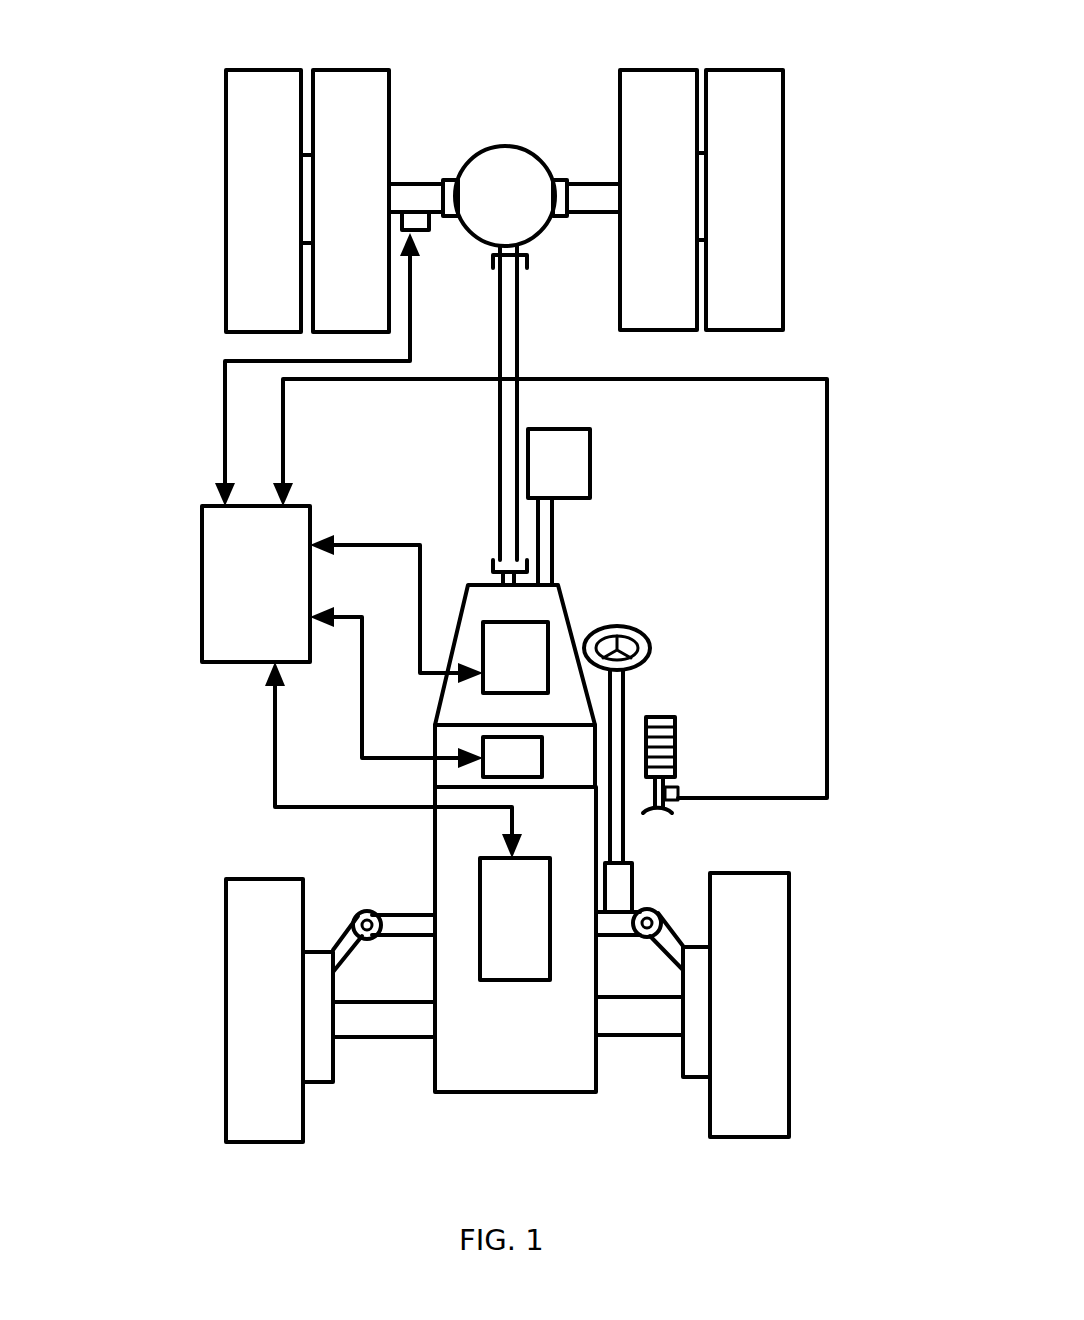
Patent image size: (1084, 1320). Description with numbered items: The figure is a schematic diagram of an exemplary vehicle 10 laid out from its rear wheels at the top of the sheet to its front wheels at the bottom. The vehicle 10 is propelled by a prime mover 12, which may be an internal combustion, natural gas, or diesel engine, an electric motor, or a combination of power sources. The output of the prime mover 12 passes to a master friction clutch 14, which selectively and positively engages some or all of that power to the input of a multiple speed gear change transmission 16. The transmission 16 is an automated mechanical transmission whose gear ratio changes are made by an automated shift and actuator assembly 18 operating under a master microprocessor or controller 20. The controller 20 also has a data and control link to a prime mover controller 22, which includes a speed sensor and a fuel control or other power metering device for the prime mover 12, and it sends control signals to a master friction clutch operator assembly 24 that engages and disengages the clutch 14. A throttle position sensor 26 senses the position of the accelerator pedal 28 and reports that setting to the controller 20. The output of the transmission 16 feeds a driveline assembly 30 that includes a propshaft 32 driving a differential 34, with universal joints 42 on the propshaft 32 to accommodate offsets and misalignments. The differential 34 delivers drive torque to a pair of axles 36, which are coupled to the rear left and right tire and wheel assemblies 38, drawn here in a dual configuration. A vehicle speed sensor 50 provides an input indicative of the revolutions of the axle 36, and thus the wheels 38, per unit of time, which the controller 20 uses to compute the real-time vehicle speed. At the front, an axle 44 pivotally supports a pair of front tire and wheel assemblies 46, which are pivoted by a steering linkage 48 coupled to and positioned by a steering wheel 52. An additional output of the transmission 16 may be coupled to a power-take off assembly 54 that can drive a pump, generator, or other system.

The vehicle 10 is at (151, 257).
The prime mover 12 is at (568, 1063).
The master friction clutch 14 is at (447, 740).
The multiple speed gear change transmission 16 is at (545, 612).
The shift and actuator assembly 18 is at (510, 646).
The master controller 20 is at (200, 581).
The prime mover controller 22 is at (515, 925).
The master friction clutch operator assembly 24 is at (525, 777).
The throttle position sensor 26 is at (680, 796).
The accelerator pedal 28 is at (663, 716).
The driveline assembly 30 is at (837, 253).
The propshaft 32 is at (500, 360).
The differential 34 is at (505, 146).
The axles 36 is at (428, 184).
The rear left and right tire and wheel assemblies 38 is at (270, 70).
The universal joints 42 is at (523, 262).
The axle 44 is at (417, 1038).
The front tire and wheel assemblies 46 is at (226, 1027).
The steering linkage 48 is at (655, 912).
The vehicle speed sensor 50 is at (418, 232).
The steering wheel 52 is at (612, 626).
The power-take off assembly 54 is at (590, 482).